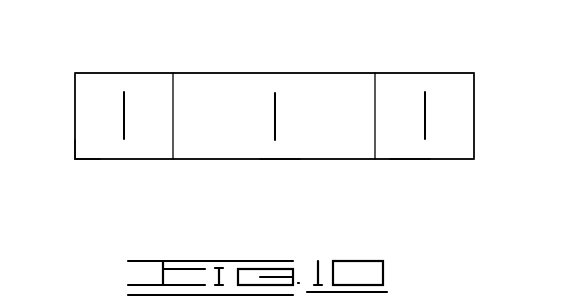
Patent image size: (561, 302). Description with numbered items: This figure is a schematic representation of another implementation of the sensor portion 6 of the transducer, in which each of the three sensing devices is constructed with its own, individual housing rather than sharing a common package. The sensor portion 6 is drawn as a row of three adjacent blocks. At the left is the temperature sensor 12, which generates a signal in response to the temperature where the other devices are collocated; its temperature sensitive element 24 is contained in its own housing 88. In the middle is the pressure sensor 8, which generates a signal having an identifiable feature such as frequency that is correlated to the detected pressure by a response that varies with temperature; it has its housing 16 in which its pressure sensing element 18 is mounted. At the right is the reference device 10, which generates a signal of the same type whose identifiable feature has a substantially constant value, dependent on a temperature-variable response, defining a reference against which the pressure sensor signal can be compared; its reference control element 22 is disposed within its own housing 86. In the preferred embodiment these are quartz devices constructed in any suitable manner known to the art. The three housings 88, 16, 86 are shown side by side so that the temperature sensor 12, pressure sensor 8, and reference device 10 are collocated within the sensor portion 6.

The sensor portion 6 is at (70, 170).
The pressure sensor 8 is at (287, 73).
The reference device 10 is at (422, 73).
The temperature sensor 12 is at (116, 73).
The housing 16 is at (283, 160).
The pressure sensitive element 18 is at (275, 122).
The reference control element 22 is at (425, 122).
The temperature sensitive element 24 is at (124, 106).
The housing 86 is at (412, 160).
The housing 88 is at (90, 160).